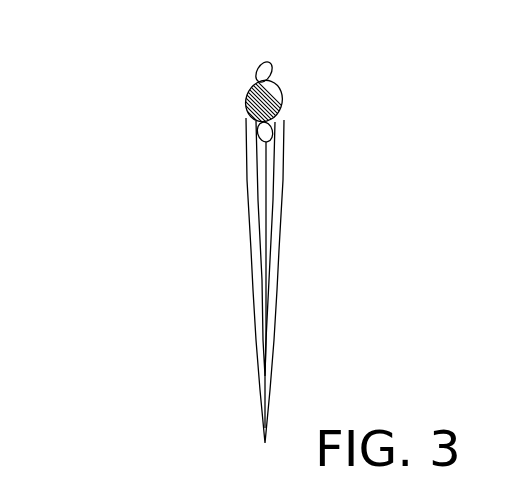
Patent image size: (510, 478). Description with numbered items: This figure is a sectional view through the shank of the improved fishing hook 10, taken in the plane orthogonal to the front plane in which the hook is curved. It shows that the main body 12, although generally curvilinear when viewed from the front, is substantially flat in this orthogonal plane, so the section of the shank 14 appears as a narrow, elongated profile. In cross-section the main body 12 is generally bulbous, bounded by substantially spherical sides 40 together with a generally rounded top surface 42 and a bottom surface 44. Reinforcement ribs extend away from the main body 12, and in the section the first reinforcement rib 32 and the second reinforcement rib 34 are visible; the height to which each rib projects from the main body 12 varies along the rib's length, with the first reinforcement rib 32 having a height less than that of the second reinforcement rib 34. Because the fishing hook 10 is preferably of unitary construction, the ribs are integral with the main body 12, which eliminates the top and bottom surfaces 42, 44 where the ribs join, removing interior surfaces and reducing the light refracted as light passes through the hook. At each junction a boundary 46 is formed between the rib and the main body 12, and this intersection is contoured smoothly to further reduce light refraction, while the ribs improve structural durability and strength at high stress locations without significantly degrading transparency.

The fishing hook 10 is at (128, 70).
The main body 12 is at (306, 84).
The shank 14 is at (251, 81).
The first reinforcement rib 32 is at (269, 62).
The second reinforcement rib 34 is at (271, 141).
The spherical sides 40 is at (248, 97).
The top surface 42 is at (256, 78).
The bottom surface 44 is at (282, 127).
The boundary 46 is at (259, 130).